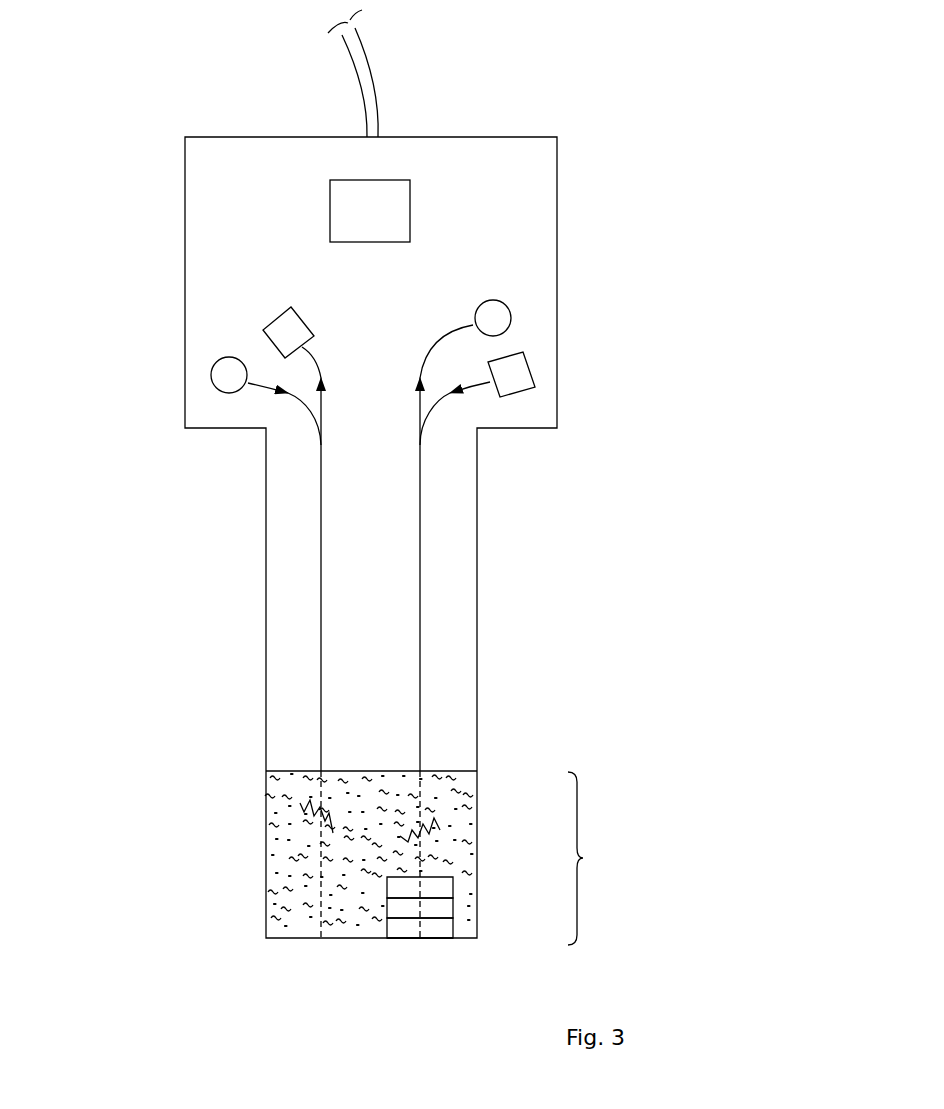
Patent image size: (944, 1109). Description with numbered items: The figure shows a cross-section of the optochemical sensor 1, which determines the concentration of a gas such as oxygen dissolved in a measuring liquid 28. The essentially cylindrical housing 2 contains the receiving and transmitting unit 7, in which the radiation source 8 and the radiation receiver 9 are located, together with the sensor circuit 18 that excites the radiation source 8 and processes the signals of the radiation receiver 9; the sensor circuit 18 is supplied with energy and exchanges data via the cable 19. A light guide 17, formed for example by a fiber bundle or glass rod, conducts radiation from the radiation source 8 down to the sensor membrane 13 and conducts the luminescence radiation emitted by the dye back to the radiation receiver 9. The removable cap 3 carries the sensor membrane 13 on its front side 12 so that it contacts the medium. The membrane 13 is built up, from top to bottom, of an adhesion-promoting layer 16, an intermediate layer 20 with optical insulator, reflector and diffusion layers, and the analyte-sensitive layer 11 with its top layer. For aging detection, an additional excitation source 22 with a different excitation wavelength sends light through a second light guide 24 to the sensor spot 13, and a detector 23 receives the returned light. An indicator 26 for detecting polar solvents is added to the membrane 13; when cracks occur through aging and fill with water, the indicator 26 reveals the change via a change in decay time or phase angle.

The optochemical sensor 1 is at (140, 98).
The housing 2 is at (537, 183).
The removable cap 3 is at (142, 862).
The receiving and transmitting unit 7 is at (527, 256).
The radiation source 8 is at (223, 372).
The radiation receiver 9 is at (287, 327).
The analyte-sensitive layer 11 is at (447, 927).
The front side 12 is at (353, 957).
The sensor membrane 13 is at (594, 858).
The adhesion-promoting layer 16 is at (443, 888).
The light guide 17 is at (322, 494).
The sensor circuit 18 is at (388, 226).
The cable 19 is at (370, 60).
The intermediate layer 20 is at (447, 906).
The excitation source 22 is at (495, 318).
The detector 23 is at (522, 372).
The light guide 24 is at (420, 510).
The indicator 26 is at (287, 912).
The measuring liquid 28 is at (472, 1007).